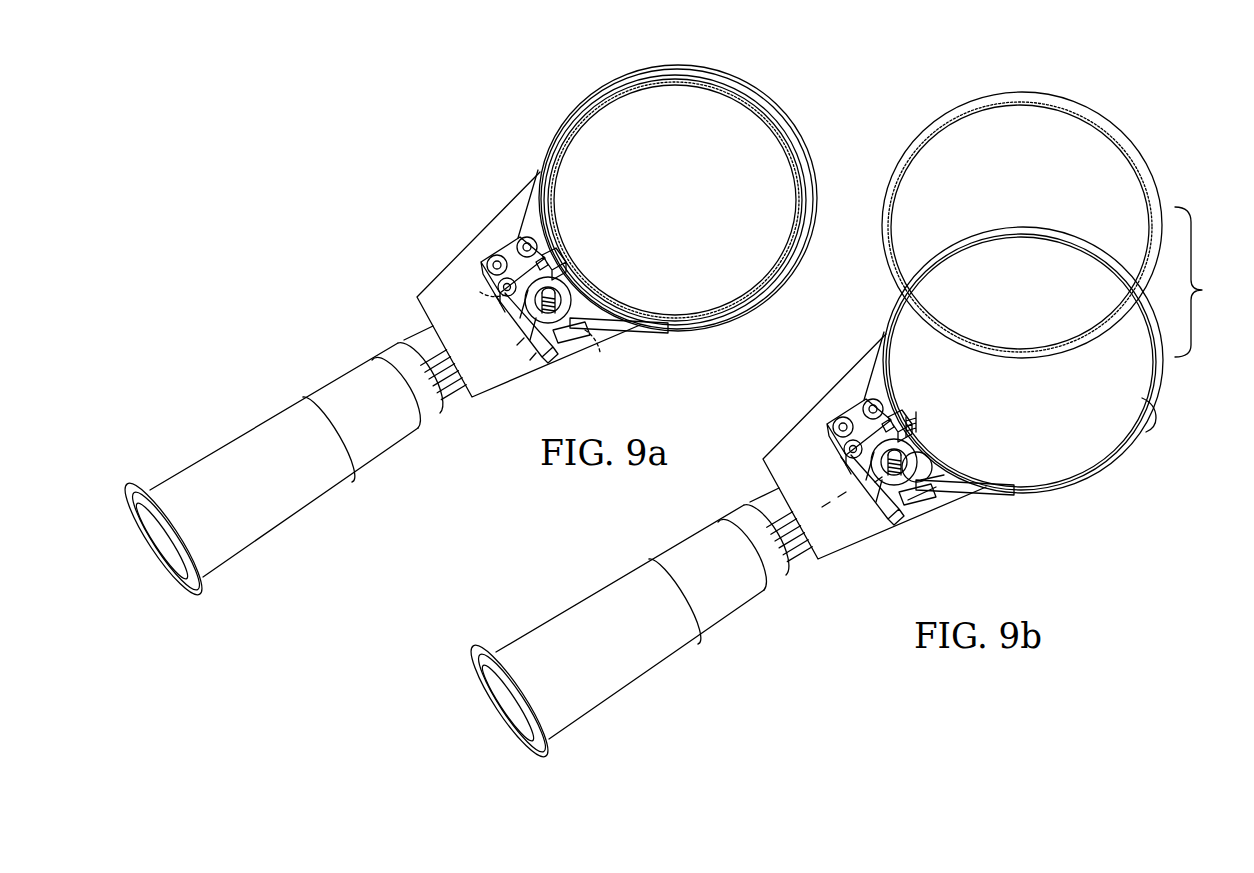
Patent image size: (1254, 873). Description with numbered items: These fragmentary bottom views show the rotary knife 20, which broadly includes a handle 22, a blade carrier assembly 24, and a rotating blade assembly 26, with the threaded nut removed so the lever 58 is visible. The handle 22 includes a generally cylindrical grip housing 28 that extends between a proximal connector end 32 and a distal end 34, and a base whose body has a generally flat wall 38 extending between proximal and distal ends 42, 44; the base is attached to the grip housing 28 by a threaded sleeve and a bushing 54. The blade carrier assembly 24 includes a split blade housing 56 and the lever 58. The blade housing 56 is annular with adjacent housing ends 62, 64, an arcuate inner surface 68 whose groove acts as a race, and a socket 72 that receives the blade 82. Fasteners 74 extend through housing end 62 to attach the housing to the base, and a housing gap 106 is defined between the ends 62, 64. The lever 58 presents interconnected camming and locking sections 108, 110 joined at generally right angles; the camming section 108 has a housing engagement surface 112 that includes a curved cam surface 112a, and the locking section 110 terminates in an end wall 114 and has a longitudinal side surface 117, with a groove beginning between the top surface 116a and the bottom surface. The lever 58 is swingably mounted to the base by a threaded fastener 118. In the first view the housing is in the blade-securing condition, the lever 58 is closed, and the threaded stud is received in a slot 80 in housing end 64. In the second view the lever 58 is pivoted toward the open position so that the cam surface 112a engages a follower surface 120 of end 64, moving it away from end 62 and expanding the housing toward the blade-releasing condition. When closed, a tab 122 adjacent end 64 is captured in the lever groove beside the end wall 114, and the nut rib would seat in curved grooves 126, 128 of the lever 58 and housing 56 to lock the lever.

In FIG. 9a, the rotary knife 20 is at (316, 196).
In FIG. 9b, the rotary knife 20 is at (710, 454).
In FIG. 9a, the handle 22 is at (257, 515).
In FIG. 9b, the handle 22 is at (614, 634).
In FIG. 9a, the blade carrier assembly 24 is at (528, 208).
In FIG. 9b, the blade carrier assembly 24 is at (849, 366).
In FIG. 9a, the rotating blade assembly 26 is at (762, 98).
In FIG. 9a, the grip housing 28 is at (268, 472).
In FIG. 9b, the grip housing 28 is at (614, 634).
In FIG. 9a, the proximal connector end 32 is at (177, 627).
In FIG. 9b, the proximal connector end 32 is at (614, 634).
In FIG. 9a, the distal end 34 is at (453, 440).
In FIG. 9b, the distal end 34 is at (730, 521).
In FIG. 9a, the flat wall 38 is at (440, 325).
In FIG. 9b, the flat wall 38 is at (874, 462).
In FIG. 9a, the proximal end 42 is at (343, 287).
In FIG. 9b, the proximal end 42 is at (854, 506).
In FIG. 9a, the distal end 44 is at (690, 217).
In FIG. 9b, the distal end 44 is at (1044, 310).
In FIG. 9a, the bushing 54 is at (432, 352).
In FIG. 9b, the bushing 54 is at (755, 521).
In FIG. 9a, the split blade housing 56 is at (700, 332).
In FIG. 9b, the split blade housing 56 is at (1023, 369).
In FIG. 9a, the lever 58 is at (548, 345).
In FIG. 9b, the lever 58 is at (806, 475).
In FIG. 9a, the housing end 62 is at (480, 268).
In FIG. 9b, the housing end 62 is at (809, 415).
In FIG. 9a, the housing end 64 is at (575, 330).
In FIG. 9b, the housing end 64 is at (947, 525).
In FIG. 9b, the arcuate inner surface 68 is at (1173, 441).
In FIG. 9b, the socket 72 is at (1149, 415).
In FIG. 9a, the fasteners 74 is at (522, 240).
In FIG. 9b, the fasteners 74 is at (835, 401).
In FIG. 9b, the slot 80 is at (948, 460).
In FIG. 9a, the blade 82 is at (785, 120).
In FIG. 9b, the blade 82 is at (1022, 212).
In FIG. 9a, the housing gap 106 is at (558, 272).
In FIG. 9b, the housing gap 106 is at (933, 438).
In FIG. 9a, the camming section 108 is at (545, 262).
In FIG. 9b, the camming section 108 is at (925, 412).
In FIG. 9a, the locking section 110 is at (530, 360).
In FIG. 9b, the locking section 110 is at (775, 464).
In FIG. 9b, the housing engagement surface 112 is at (922, 543).
In FIG. 9b, the cam surface 112a is at (878, 479).
In FIG. 9b, the end wall 114 is at (845, 591).
In FIG. 9a, the top surface 116a is at (517, 345).
In FIG. 9b, the top surface 116a is at (868, 573).
In FIG. 9a, the longitudinal side surface 117 is at (500, 305).
In FIG. 9a, the threaded fastener 118 is at (500, 290).
In FIG. 9b, the threaded fastener 118 is at (794, 431).
In FIG. 9b, the follower surface 120 is at (951, 428).
In FIG. 9b, the tab 122 is at (937, 537).
In FIG. 9a, the curved groove 126 is at (558, 330).
In FIG. 9b, the curved groove 126 is at (887, 535).
In FIG. 9a, the curved groove 128 is at (572, 280).
In FIG. 9b, the curved groove 128 is at (964, 511).